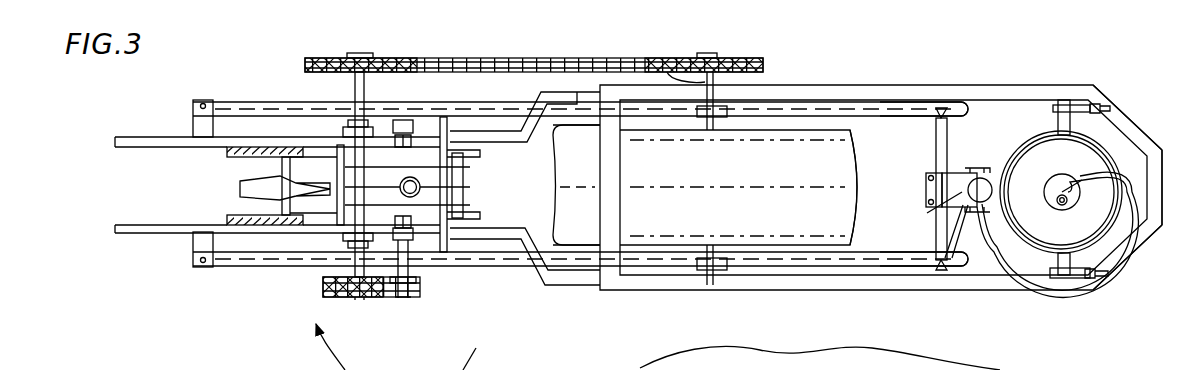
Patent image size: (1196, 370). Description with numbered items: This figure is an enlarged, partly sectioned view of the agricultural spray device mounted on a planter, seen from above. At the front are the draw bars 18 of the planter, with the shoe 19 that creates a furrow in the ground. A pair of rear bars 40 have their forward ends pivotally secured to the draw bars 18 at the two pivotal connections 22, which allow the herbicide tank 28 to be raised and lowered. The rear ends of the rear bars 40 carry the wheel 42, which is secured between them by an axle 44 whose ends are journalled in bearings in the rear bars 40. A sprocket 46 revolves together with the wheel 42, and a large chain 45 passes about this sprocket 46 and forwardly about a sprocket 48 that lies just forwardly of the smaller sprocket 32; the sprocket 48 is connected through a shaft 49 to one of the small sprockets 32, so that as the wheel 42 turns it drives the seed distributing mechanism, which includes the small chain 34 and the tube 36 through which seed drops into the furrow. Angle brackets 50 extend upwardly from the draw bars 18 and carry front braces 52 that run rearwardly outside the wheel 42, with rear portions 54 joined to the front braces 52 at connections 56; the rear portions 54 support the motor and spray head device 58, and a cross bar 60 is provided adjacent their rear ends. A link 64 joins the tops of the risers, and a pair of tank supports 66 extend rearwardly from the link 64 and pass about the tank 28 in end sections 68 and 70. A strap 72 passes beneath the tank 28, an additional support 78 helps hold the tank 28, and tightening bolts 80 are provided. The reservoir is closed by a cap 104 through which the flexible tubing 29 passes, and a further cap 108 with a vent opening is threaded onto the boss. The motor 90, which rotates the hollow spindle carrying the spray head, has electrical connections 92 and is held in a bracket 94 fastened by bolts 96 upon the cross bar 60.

The draw bars 18 is at (132, 148).
The shoe 19 is at (246, 190).
The pivotal connection 22 is at (396, 84).
The herbicide tank 28 is at (1040, 118).
The tubing 29 is at (1086, 192).
The sprockets 32 is at (330, 288).
The small chain 34 is at (383, 298).
The tube 36 is at (420, 182).
The rear bars 40 is at (508, 140).
The wheel 42 is at (854, 166).
The axle 44 is at (700, 74).
The large chain 45 is at (582, 56).
The sprocket 46 is at (730, 58).
The sprocket 48 is at (318, 58).
The shaft 49 is at (353, 88).
The angle brackets 50 is at (198, 128).
The front braces 52 is at (473, 84).
The rear portions 54 is at (866, 100).
The connection 56 is at (730, 112).
The motor and spray head device 58 is at (960, 174).
The cross bar 60 is at (937, 136).
The link 64 is at (612, 142).
The tank supports 66 is at (965, 95).
The end section 68 is at (1124, 122).
The end section 70 is at (1158, 200).
The strap 72 is at (1080, 102).
The support 78 is at (1102, 152).
The tightening bolts 80 is at (1108, 106).
The motor 90 is at (986, 228).
The electrical connections 92 is at (966, 236).
The bracket 94 is at (930, 222).
The bolts 96 is at (926, 190).
The cap 104 is at (1062, 186).
The cap 108 is at (1056, 198).